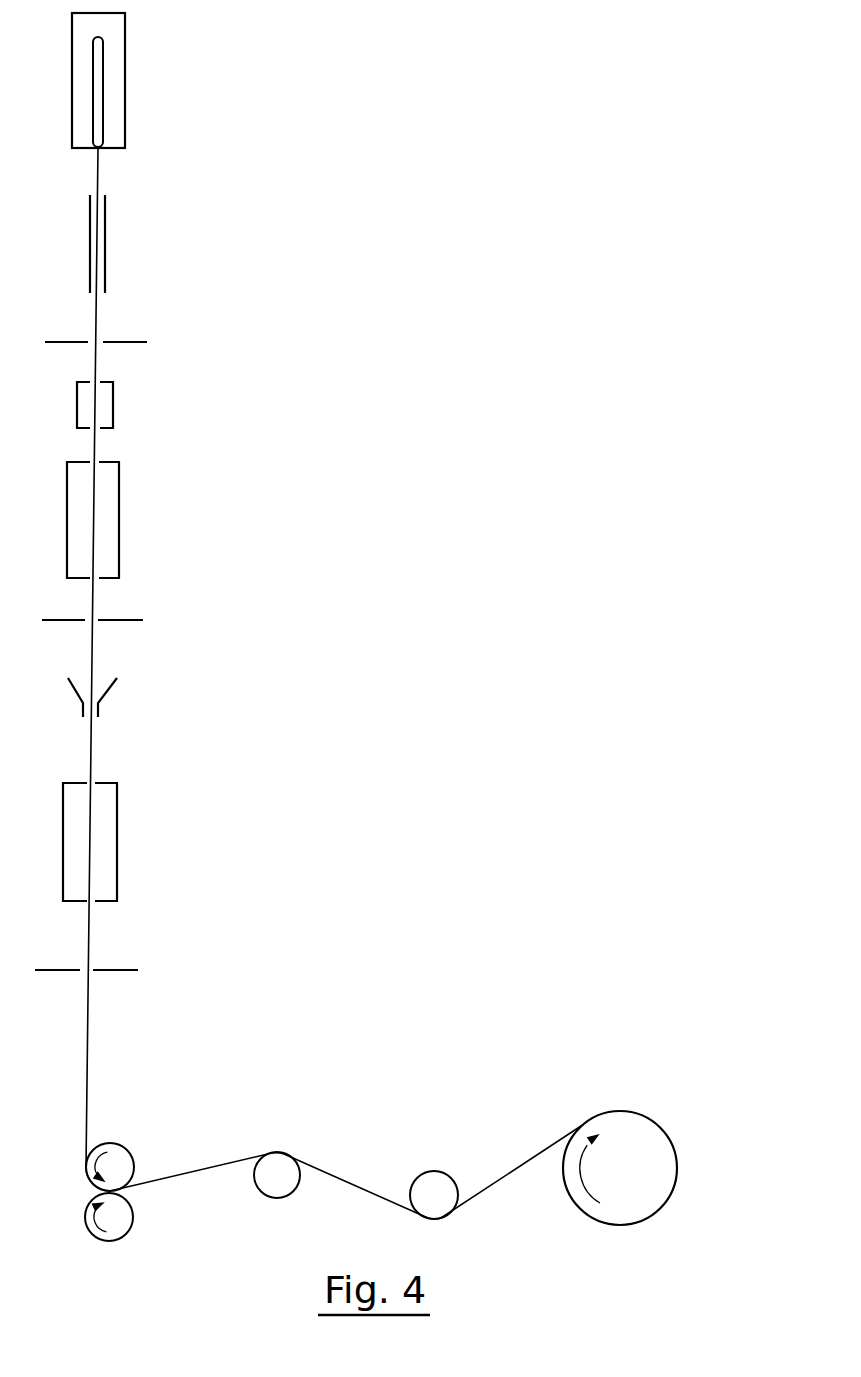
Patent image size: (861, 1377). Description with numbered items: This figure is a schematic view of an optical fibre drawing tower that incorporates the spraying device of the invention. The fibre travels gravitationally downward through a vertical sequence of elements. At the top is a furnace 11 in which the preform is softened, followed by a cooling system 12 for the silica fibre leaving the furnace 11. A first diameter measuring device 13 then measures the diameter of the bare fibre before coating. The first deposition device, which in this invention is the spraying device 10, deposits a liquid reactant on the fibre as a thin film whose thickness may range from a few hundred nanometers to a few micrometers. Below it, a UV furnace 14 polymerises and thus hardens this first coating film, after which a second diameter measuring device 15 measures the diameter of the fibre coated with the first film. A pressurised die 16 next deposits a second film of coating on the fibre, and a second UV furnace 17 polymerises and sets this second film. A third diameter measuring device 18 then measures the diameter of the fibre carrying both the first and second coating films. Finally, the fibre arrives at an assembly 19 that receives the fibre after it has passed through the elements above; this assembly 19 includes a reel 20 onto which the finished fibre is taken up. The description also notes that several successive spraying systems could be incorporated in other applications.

The spraying device 10 is at (136, 407).
The furnace 11 is at (136, 73).
The cooling system 12 is at (120, 216).
The first diameter measuring device 13 is at (120, 328).
The UV furnace 14 is at (130, 528).
The second diameter measuring device 15 is at (128, 606).
The pressurised die 16 is at (128, 694).
The second UV furnace 17 is at (139, 827).
The third diameter measuring device 18 is at (151, 957).
The assembly 19 is at (295, 1128).
The reel 20 is at (664, 1114).